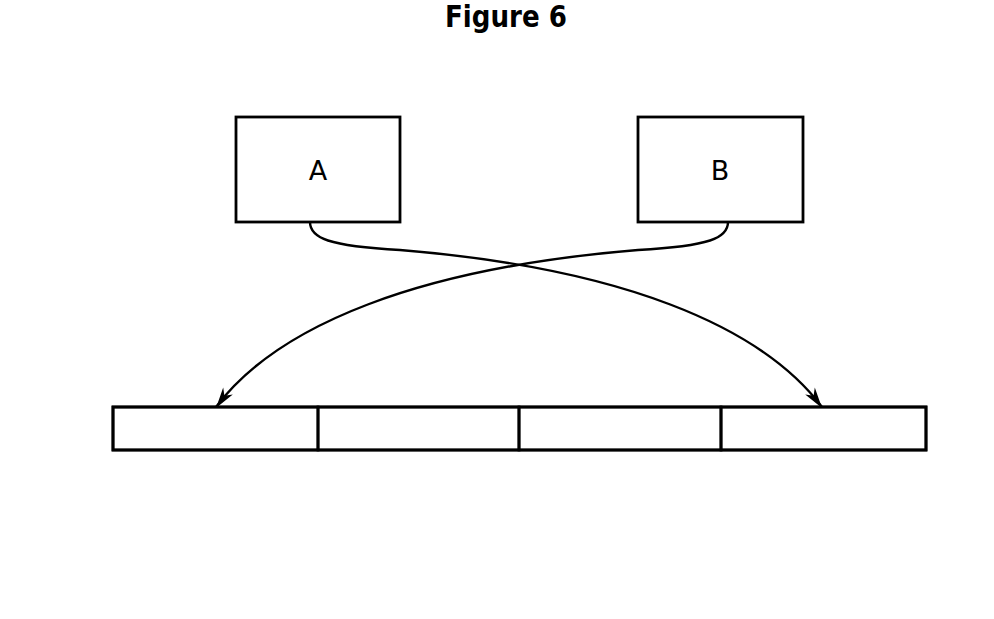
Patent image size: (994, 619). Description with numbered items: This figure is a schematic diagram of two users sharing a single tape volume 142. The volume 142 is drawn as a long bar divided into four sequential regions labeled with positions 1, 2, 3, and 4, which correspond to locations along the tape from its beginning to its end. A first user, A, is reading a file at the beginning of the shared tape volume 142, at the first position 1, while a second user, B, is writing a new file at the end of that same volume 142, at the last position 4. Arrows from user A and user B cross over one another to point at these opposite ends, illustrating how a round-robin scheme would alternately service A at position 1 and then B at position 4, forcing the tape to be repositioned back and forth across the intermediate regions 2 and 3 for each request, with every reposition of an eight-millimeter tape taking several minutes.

The shared tape volume 142 is at (478, 451).
The buffer slot 1 (field a) 1 is at (215, 451).
The buffer slot 2 (field b) 2 is at (418, 451).
The buffer slot 3 (field c) 3 is at (620, 451).
The buffer slot 4 (field d) 4 is at (823, 451).